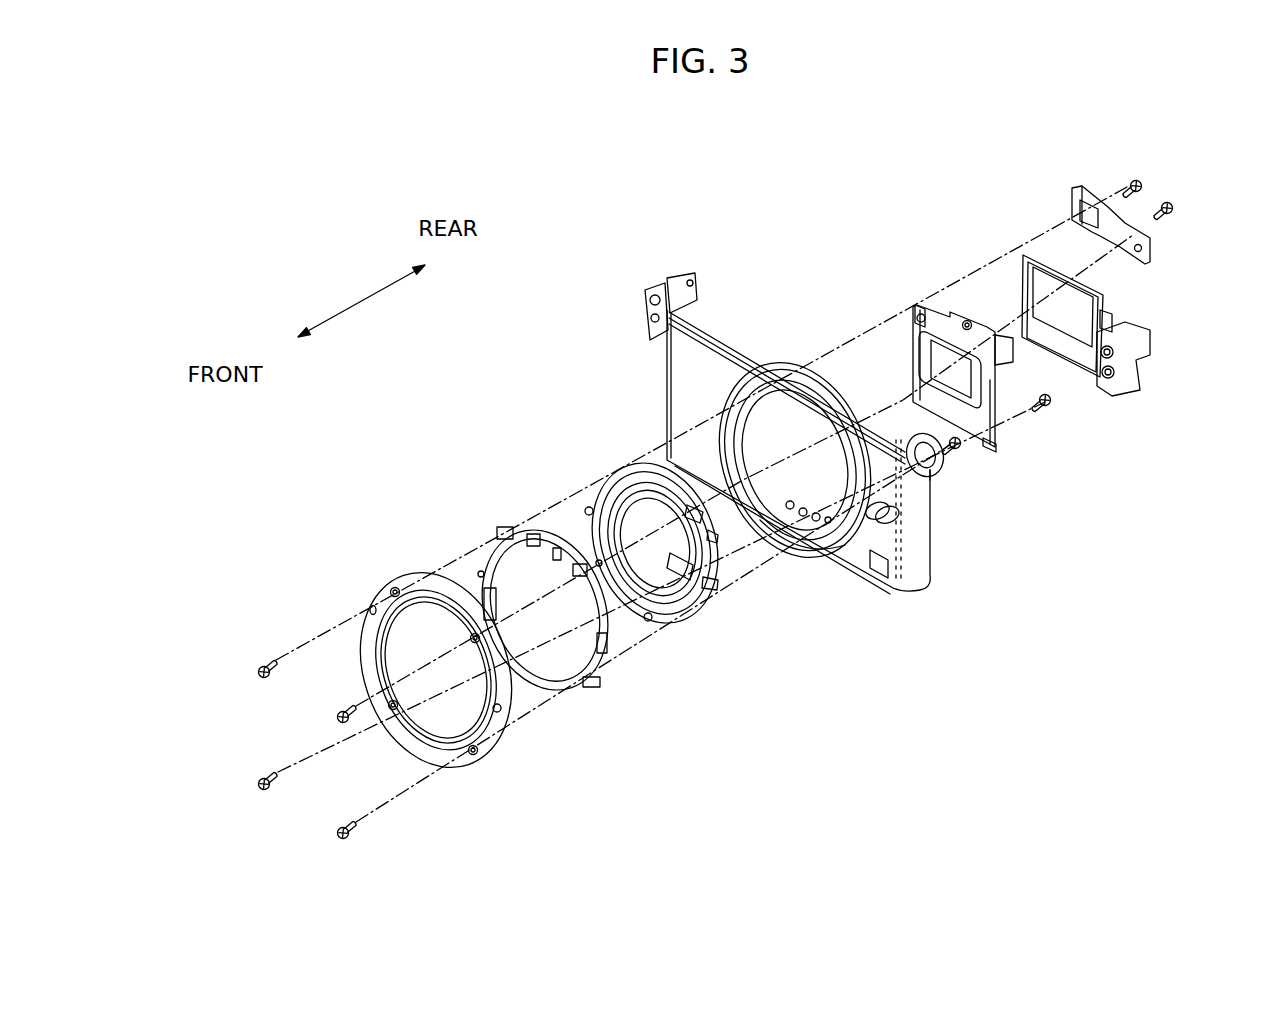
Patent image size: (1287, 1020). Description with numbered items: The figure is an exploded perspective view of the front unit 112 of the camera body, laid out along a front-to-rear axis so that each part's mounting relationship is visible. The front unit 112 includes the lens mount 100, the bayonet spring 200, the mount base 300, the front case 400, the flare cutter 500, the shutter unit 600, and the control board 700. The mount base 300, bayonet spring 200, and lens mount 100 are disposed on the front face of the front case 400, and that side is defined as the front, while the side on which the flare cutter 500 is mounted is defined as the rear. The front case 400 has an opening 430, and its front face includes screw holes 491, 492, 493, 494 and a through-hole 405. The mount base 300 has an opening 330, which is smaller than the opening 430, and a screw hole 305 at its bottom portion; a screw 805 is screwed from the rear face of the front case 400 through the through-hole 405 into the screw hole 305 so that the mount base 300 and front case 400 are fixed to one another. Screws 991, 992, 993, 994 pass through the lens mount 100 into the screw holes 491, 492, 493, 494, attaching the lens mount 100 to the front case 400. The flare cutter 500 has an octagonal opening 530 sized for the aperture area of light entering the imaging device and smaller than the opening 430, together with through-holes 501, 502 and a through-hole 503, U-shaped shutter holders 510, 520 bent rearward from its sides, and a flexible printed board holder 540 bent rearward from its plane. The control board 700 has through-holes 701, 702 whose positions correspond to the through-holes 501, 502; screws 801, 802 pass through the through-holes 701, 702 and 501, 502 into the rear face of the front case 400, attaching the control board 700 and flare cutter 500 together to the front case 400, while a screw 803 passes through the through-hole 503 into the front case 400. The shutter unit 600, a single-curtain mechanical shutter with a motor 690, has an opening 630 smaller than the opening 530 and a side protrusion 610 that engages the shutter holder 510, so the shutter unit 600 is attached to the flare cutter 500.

The front unit 112 is at (944, 143).
The lens mount 100 is at (412, 592).
The bayonet spring 200 is at (520, 527).
The mount base 300 is at (607, 473).
The screw hole 305 is at (652, 623).
The opening 330 is at (697, 617).
The front case 400 is at (703, 353).
The through-hole 405 is at (800, 557).
The opening 430 is at (840, 547).
The screw hole 491 is at (758, 370).
The screw hole 492 is at (830, 385).
The screw hole 493 is at (672, 458).
The screw hole 494 is at (838, 548).
The flare cutter 500 is at (957, 297).
The through-hole 501 is at (920, 313).
The through-hole 502 is at (967, 321).
The through-hole 503 is at (978, 465).
The shutter holder 510 is at (1000, 425).
The shutter holder 520 is at (917, 320).
The opening 530 is at (960, 367).
The flexible printed board holder 540 is at (1013, 343).
The shutter unit 600 is at (1047, 290).
The protrusion 610 is at (1112, 318).
The opening 630 is at (1060, 298).
The motor 690 is at (1130, 383).
The control board 700 is at (1078, 188).
The through-hole 701 is at (1103, 240).
The through-hole 702 is at (1142, 246).
The screw 801 is at (1128, 180).
The screw 802 is at (1170, 203).
The screw 803 is at (1042, 412).
The screw 805 is at (952, 455).
The screw 991 is at (263, 664).
The screw 992 is at (337, 710).
The screw 993 is at (262, 792).
The screw 994 is at (340, 840).